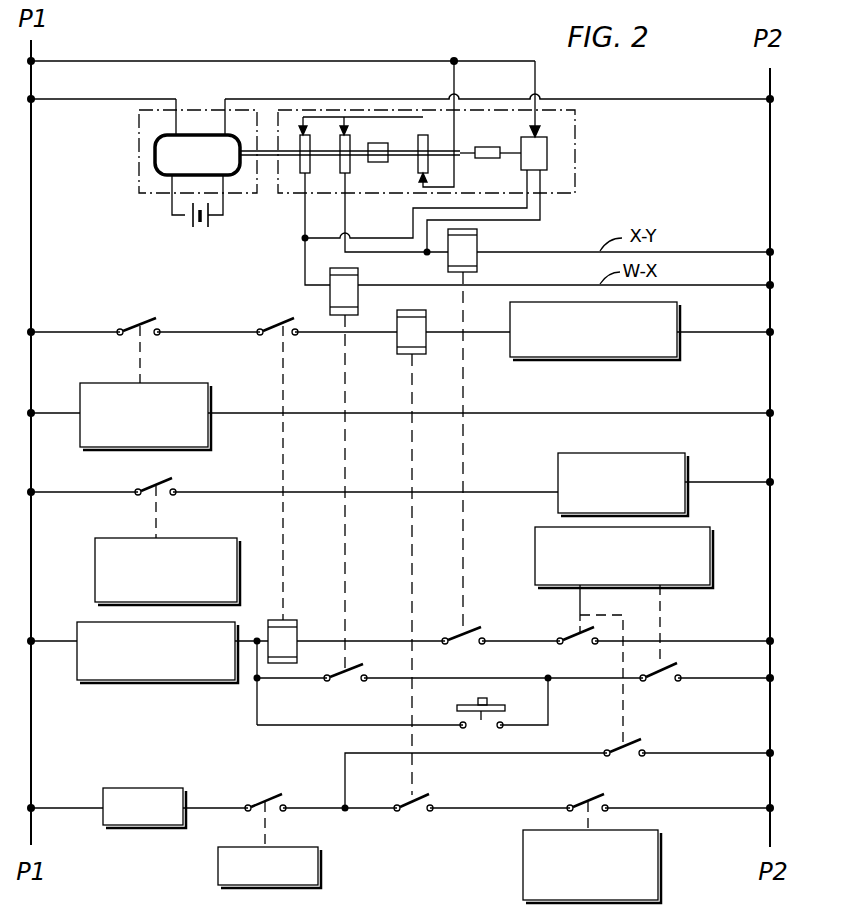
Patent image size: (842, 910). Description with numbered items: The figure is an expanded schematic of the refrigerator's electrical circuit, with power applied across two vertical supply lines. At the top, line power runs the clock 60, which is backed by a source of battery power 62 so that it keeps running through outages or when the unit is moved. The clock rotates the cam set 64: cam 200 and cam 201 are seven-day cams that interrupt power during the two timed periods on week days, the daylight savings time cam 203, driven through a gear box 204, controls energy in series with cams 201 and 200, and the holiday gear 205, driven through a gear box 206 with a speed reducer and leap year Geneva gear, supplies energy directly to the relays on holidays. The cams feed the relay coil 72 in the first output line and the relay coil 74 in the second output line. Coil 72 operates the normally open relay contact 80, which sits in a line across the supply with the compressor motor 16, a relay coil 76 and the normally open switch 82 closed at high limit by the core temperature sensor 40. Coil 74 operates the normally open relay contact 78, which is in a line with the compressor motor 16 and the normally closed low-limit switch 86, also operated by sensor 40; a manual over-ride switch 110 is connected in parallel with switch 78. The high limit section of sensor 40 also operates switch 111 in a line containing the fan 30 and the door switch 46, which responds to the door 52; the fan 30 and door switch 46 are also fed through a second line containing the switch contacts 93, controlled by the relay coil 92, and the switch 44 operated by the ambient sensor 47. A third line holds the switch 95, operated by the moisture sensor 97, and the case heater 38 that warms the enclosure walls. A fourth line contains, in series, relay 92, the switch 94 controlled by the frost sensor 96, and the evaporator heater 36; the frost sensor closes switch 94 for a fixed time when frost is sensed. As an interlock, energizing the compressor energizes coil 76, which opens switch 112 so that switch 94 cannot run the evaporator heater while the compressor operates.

The clock 60 is at (140, 187).
The source of battery power 62 is at (185, 225).
The cam set 64 is at (575, 173).
The cam 200 is at (350, 160).
The cam 201 is at (300, 158).
The daylight savings time cam 203 is at (418, 162).
The gear box 204 is at (376, 147).
The holiday gear 205 is at (548, 145).
The gear box 206 is at (487, 150).
The relay coil 72 is at (478, 243).
The relay coil 74 is at (359, 279).
The relay coil 92 is at (396, 340).
The switch 94 is at (139, 322).
The switch 112 is at (275, 322).
The frost sensor 96 is at (210, 392).
The evaporator heater 36 is at (615, 360).
The switch 95 is at (152, 481).
The moisture sensor 97 is at (200, 537).
The case heater 38 is at (687, 463).
The core temperature sensor 40 is at (714, 549).
The compressor motor 16 is at (155, 684).
The relay coil 76 is at (295, 618).
The relay contact 80 is at (460, 630).
The switch 82 is at (568, 631).
The switch 86 is at (662, 682).
The relay contact 78 is at (342, 683).
The manual over-ride switch 110 is at (481, 723).
The switch 111 is at (627, 756).
The door switch 46 is at (260, 798).
The fan 30 is at (140, 828).
The door 52 is at (320, 858).
The switch contacts 93 is at (408, 812).
The switch 44 is at (577, 800).
The ambient sensor 47 is at (661, 863).